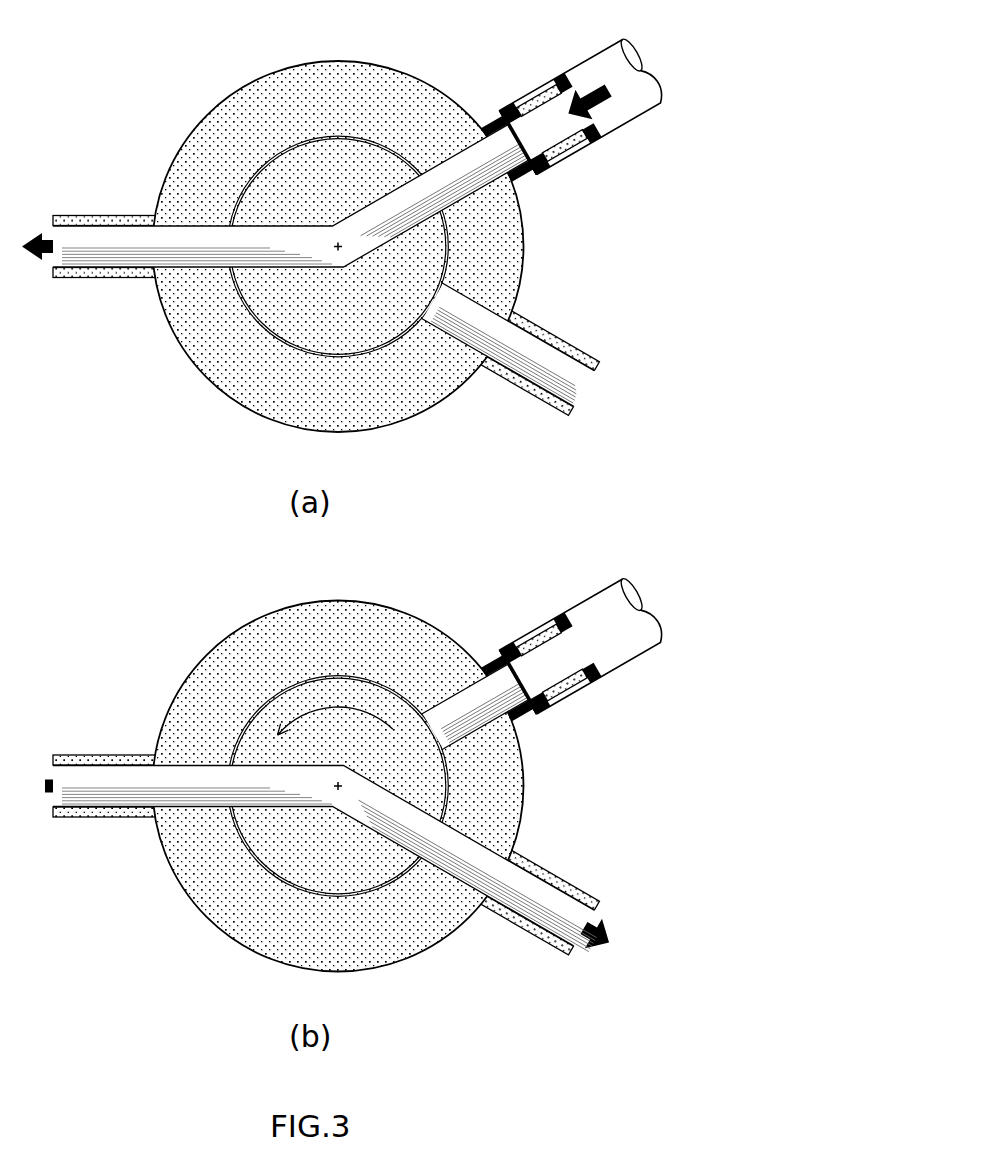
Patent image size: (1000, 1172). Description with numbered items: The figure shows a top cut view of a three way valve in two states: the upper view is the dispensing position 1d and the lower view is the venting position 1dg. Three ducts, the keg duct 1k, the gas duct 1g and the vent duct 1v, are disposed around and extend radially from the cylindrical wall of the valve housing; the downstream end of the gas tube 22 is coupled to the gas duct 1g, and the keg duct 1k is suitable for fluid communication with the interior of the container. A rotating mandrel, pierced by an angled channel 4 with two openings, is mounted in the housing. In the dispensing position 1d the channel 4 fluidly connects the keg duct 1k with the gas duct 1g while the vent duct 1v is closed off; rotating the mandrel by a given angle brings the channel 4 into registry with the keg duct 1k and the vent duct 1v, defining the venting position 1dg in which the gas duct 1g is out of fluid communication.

The dispensing position 1d is at (190, 107).
The venting position 1dg is at (190, 604).
The channel 4 is at (383, 215).
The keg duct 1k is at (117, 218).
The gas duct 1g is at (520, 177).
The vent duct 1v is at (552, 333).
The gas tube 22 is at (618, 120).